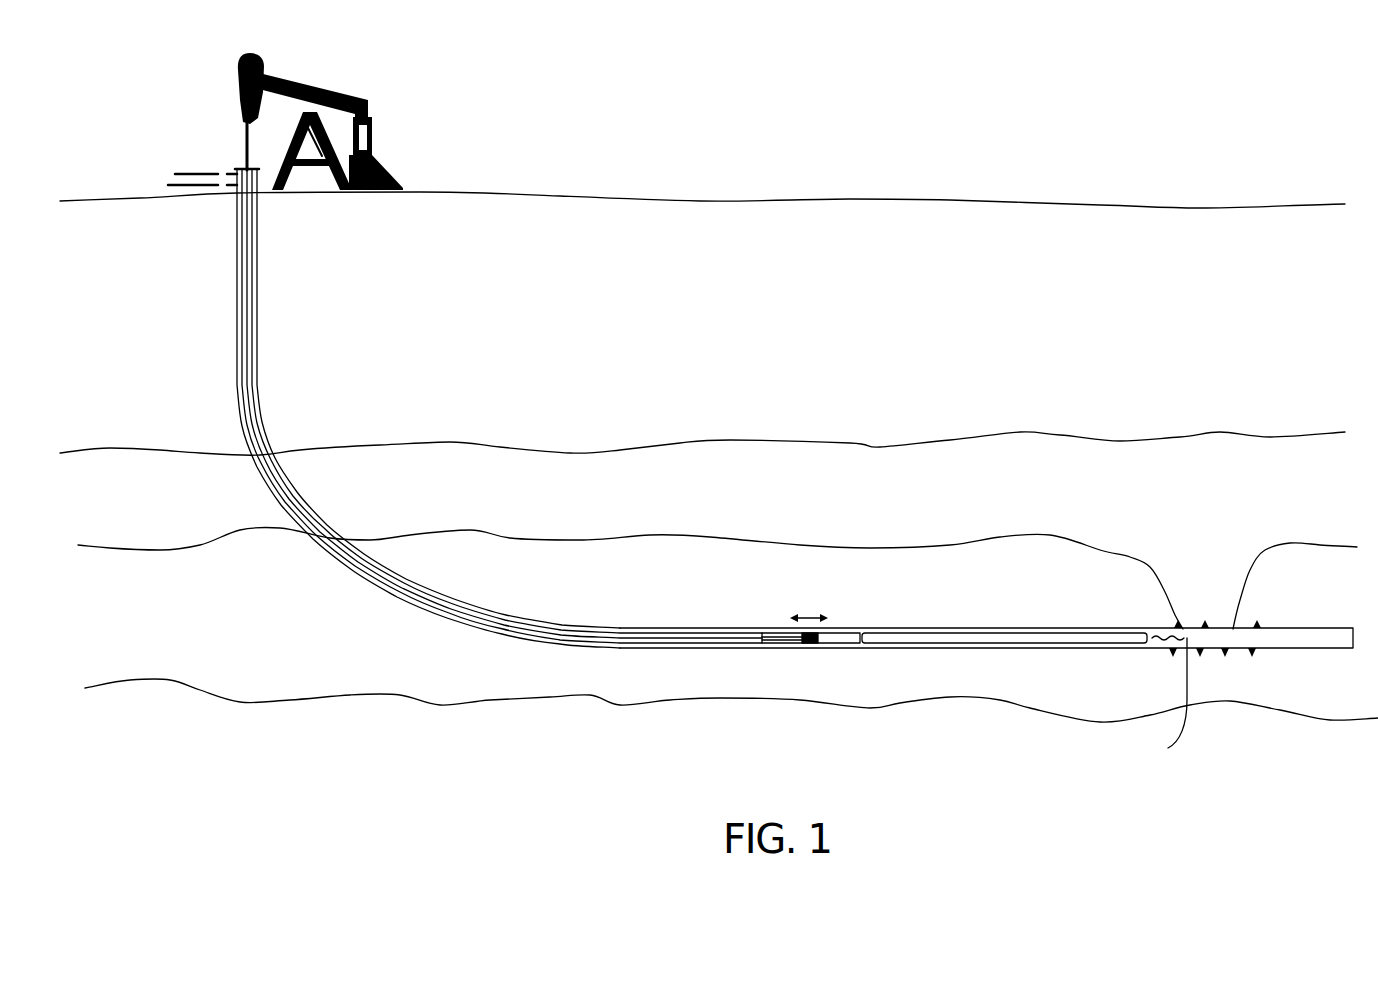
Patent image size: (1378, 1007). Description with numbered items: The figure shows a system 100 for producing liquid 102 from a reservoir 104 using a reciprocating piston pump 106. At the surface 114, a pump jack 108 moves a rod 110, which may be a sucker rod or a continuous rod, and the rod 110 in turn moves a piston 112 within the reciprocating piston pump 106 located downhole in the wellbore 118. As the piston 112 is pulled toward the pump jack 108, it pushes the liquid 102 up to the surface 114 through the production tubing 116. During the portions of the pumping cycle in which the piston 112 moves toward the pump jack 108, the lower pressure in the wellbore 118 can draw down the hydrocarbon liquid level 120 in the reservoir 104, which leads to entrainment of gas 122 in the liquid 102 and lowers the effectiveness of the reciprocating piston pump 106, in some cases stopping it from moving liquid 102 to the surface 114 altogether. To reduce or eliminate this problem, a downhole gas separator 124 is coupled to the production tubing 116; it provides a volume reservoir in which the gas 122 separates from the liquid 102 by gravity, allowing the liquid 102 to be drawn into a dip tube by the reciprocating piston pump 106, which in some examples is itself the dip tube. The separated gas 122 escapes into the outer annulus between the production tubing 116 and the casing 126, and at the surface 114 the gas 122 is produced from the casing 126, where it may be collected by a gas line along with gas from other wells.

The system 100 is at (798, 802).
The liquid 102 is at (190, 173).
The reservoir 104 is at (1072, 448).
The reciprocating piston pump 106 is at (860, 613).
The pump jack 108 is at (296, 80).
The rod 110 is at (247, 162).
The piston 112 is at (808, 643).
The surface 114 is at (811, 200).
The production tubing 116 is at (256, 391).
The wellbore 118 is at (1302, 652).
The hydrocarbon liquid level 120 is at (1255, 577).
The gas 122 is at (168, 185).
The downhole gas separator 124 is at (1147, 613).
The casing 126 is at (259, 416).